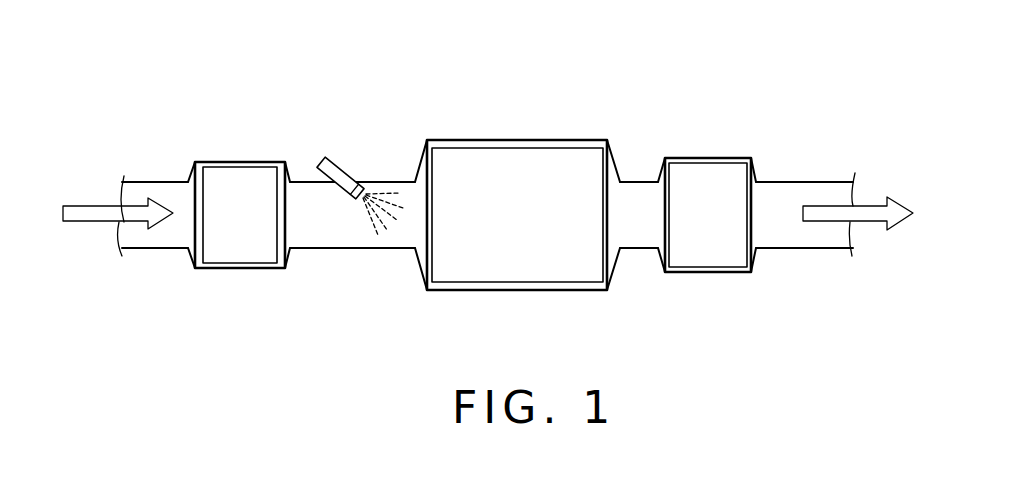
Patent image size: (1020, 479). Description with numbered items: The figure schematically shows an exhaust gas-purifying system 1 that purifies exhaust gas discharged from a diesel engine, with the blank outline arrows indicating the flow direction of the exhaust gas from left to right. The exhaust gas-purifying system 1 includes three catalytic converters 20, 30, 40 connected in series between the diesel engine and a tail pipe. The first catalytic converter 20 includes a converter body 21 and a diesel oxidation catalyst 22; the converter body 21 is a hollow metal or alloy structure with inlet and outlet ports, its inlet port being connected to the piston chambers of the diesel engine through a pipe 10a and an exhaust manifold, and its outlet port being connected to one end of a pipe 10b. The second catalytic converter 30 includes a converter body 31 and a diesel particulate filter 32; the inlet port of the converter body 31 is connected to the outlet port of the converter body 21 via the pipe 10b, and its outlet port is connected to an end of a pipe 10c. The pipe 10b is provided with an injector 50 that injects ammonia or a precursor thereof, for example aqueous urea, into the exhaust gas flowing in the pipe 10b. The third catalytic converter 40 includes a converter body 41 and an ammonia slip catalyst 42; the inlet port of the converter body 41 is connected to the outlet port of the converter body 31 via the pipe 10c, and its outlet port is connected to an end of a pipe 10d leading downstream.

The exhaust gas-purifying system 1 is at (836, 84).
The pipe 10a is at (158, 180).
The pipe 10b is at (392, 180).
The pipe 10c is at (638, 178).
The pipe 10d is at (793, 178).
The catalytic converter 20 is at (240, 209).
The converter body 21 is at (215, 270).
The diesel oxidation catalyst 22 is at (257, 262).
The catalytic converter 30 is at (517, 208).
The converter body 31 is at (483, 292).
The diesel particulate filter 32 is at (538, 279).
The catalytic converter 40 is at (708, 209).
The converter body 41 is at (684, 274).
The ammonia slip catalyst 42 is at (727, 262).
The injector 50 is at (322, 156).